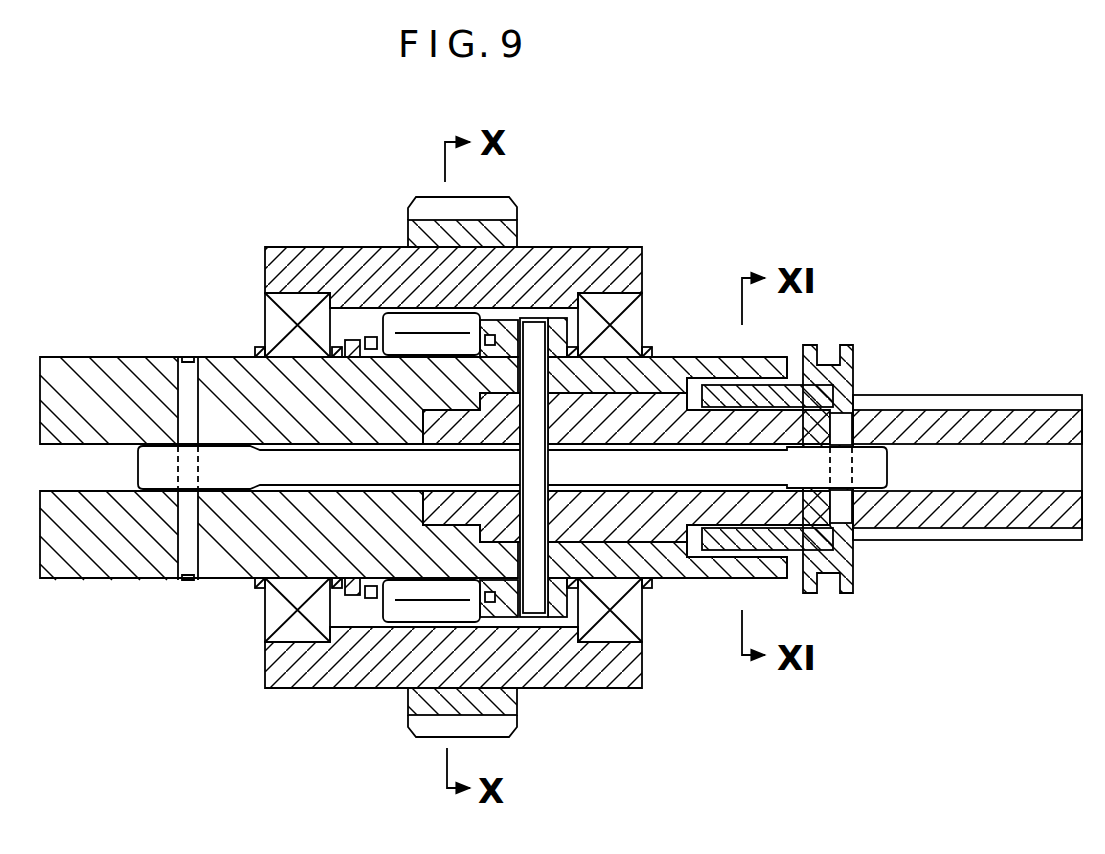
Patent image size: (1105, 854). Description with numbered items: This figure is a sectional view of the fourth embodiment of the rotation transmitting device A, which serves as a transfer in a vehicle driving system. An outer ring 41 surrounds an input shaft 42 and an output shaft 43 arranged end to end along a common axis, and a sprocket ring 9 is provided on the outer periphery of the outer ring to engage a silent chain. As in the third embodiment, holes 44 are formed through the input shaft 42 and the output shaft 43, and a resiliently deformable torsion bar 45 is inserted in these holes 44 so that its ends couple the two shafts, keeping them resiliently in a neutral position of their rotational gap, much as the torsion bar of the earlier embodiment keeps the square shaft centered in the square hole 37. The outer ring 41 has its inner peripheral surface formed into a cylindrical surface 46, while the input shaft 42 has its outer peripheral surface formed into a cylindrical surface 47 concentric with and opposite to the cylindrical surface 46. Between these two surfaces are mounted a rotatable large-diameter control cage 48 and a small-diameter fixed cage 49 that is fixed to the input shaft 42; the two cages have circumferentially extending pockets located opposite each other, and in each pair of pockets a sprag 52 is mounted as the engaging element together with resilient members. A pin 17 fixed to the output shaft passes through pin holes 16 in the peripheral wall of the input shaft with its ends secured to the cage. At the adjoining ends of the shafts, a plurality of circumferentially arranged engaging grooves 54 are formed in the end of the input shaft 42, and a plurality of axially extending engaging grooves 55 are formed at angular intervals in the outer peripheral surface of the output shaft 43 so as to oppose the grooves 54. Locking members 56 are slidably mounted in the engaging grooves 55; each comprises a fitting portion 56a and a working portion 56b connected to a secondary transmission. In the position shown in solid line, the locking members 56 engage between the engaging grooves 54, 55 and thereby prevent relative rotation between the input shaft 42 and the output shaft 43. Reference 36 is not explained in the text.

The sprocket ring 9 is at (497, 208).
The pin holes 16 is at (625, 262).
The pin 17 is at (543, 370).
The piston carrier 36 is at (463, 510).
The square hole 37 is at (412, 506).
The outer ring 41 is at (284, 247).
The input shaft 42 is at (88, 405).
The output shaft 43 is at (990, 505).
The holes 44 is at (67, 484).
The torsion bar 45 is at (657, 470).
The cylindrical surface 46 is at (433, 313).
The cylindrical surface 47 is at (405, 335).
The control cage 48 is at (540, 336).
The fixed cage 49 is at (350, 342).
The sprag 52 is at (368, 337).
The engaging grooves 54 is at (753, 385).
The engaging grooves 55 is at (980, 405).
The locking member 56 is at (855, 343).
The fitting portion 56a is at (760, 537).
The working portion 56b is at (847, 567).
The rotation transmitting device A is at (700, 290).